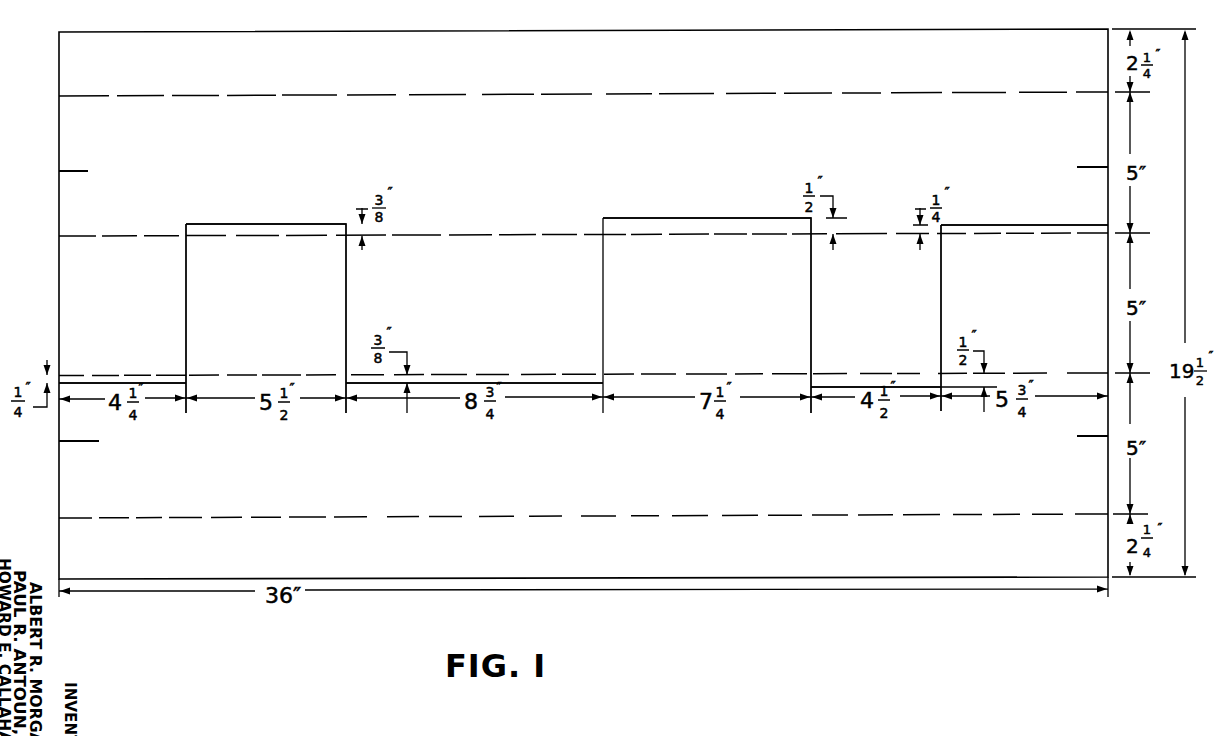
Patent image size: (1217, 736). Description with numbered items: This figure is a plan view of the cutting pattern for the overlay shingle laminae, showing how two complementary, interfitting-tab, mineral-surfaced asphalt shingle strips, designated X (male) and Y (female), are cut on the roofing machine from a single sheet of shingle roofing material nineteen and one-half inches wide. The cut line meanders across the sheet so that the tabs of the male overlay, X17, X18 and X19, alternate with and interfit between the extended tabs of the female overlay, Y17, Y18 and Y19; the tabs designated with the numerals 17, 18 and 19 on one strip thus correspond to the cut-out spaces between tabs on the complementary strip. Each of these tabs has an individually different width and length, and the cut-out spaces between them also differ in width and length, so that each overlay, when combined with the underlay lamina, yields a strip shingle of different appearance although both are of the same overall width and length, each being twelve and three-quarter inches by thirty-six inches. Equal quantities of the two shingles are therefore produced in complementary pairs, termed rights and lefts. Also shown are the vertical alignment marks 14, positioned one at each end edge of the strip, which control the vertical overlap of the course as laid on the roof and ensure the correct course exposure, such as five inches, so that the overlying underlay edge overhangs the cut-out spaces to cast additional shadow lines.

The vertical alignment marks 14 is at (86, 172).
The tab of X (male) overlay X17 is at (123, 328).
The extended tab of Y (female) overlay Y19 is at (282, 328).
The tab of X (male) overlay X18 is at (478, 328).
The extended tab of Y (female) overlay Y18 is at (718, 326).
The tab of X (male) overlay X19 is at (878, 326).
The extended tab of Y (female) overlay Y17 is at (1035, 326).
The panels X17 and Y17 17 is at (583, 318).
The panels X18 and Y18 18 is at (578, 315).
The panels Y19 and X19 19 is at (563, 318).